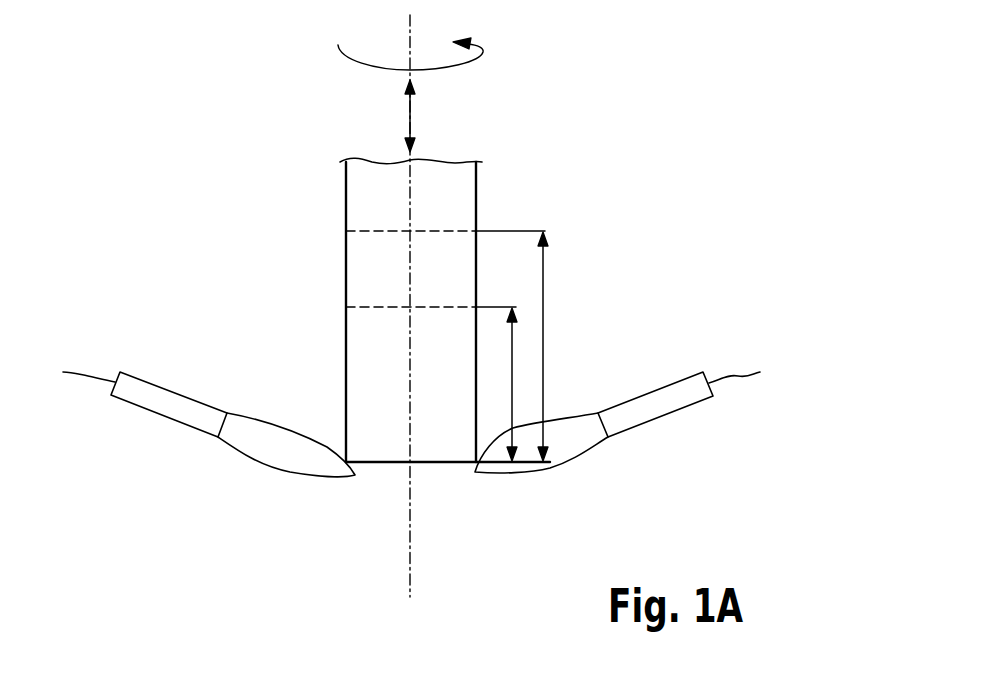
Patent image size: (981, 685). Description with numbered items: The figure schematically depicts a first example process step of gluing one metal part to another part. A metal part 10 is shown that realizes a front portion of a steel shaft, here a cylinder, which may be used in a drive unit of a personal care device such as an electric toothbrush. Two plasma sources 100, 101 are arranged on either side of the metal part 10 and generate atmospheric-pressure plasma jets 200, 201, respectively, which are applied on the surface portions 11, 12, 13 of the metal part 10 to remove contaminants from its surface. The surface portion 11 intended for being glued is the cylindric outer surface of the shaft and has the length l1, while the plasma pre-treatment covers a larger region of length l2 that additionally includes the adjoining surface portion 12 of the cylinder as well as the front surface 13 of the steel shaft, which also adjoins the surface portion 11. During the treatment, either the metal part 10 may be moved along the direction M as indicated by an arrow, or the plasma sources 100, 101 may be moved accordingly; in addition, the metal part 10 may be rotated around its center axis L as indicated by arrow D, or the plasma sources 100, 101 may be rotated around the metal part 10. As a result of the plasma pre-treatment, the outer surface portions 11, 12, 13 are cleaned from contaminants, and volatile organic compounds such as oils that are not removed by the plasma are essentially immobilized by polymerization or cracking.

The metal part 10 is at (444, 168).
The surface portion intended for being glued 11 is at (358, 377).
The additional surface portion 12 is at (363, 268).
The front surface 13 is at (423, 464).
The plasma source 100 is at (667, 380).
The plasma source 101 is at (160, 383).
The atmospheric-pressure plasma jet 200 is at (528, 475).
The atmospheric-pressure plasma jet 201 is at (302, 477).
The center axis L is at (410, 35).
The arrow indicating rotation D is at (417, 44).
The direction of movement M is at (397, 116).
The length of surface portion intended for being glued l1 is at (503, 384).
The length of plasma pre-treated surface l2 is at (519, 346).